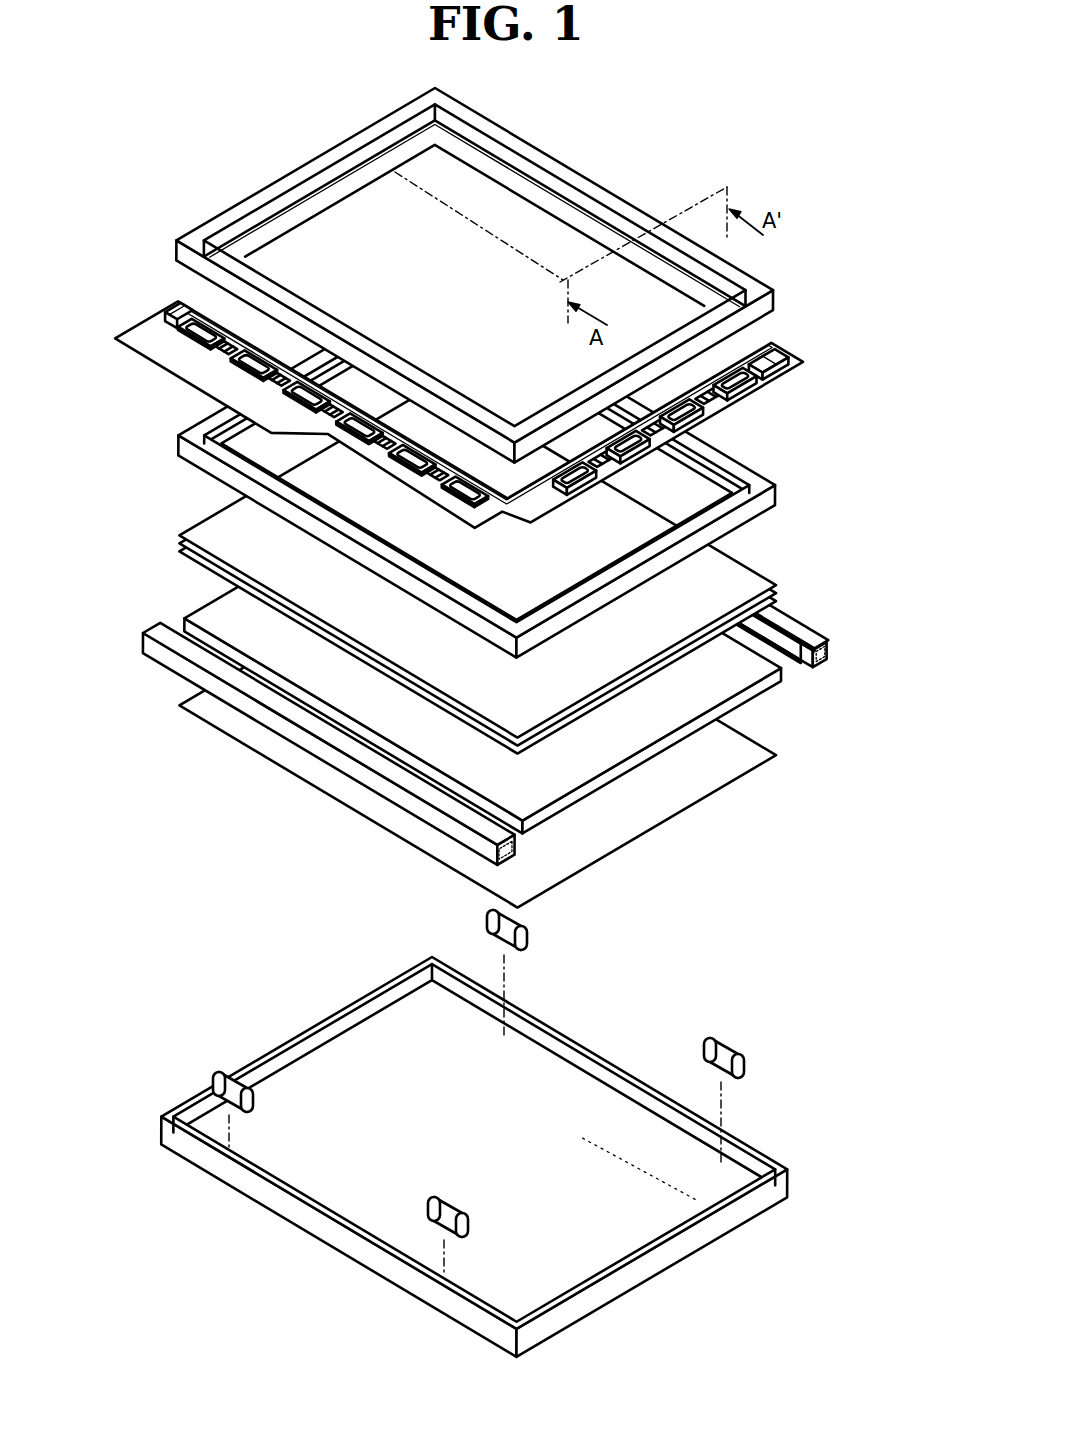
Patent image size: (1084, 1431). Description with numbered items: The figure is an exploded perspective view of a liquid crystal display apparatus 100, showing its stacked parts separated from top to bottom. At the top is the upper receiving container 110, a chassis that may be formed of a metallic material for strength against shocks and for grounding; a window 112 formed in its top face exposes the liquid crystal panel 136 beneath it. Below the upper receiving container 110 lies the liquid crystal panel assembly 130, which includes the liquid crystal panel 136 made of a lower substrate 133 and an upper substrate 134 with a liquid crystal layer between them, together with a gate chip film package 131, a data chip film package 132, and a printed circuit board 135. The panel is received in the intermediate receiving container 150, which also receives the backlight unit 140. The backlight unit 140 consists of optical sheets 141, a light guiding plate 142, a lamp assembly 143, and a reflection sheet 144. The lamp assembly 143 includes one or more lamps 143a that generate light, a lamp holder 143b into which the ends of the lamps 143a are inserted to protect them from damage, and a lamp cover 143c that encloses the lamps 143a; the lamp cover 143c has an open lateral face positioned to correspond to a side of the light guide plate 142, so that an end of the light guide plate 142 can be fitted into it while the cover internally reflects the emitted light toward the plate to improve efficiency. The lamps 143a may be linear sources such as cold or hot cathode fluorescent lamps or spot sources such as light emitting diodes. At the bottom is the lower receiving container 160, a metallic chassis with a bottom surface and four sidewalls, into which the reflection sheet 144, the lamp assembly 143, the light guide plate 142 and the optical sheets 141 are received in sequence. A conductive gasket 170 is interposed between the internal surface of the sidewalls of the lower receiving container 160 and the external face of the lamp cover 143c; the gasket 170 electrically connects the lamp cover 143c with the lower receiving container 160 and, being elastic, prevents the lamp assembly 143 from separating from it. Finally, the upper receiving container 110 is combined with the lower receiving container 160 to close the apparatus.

The liquid crystal display apparatus 100 is at (735, 98).
The upper receiving container 110 is at (532, 275).
The window 112 is at (552, 176).
The liquid crystal panel assembly 130 is at (499, 350).
The gate chip film package 131 is at (777, 386).
The data chip film package 132 is at (183, 300).
The lower substrate 133 is at (780, 348).
The upper substrate 134 is at (770, 325).
The printed circuit board 135 is at (121, 331).
The liquid crystal panel 136 is at (566, 327).
The backlight unit 140 is at (506, 645).
The optical sheets 141 is at (457, 568).
The light guiding plate 142 is at (222, 618).
The lamp assembly 143 is at (546, 636).
The lamps 143a is at (820, 612).
The lamp holder 143b is at (822, 656).
The lamp cover 143c is at (830, 641).
The reflection sheet 144 is at (196, 699).
The intermediate receiving container 150 is at (785, 497).
The lower receiving container 160 is at (796, 1182).
The conductive gasket 170 is at (744, 1062).